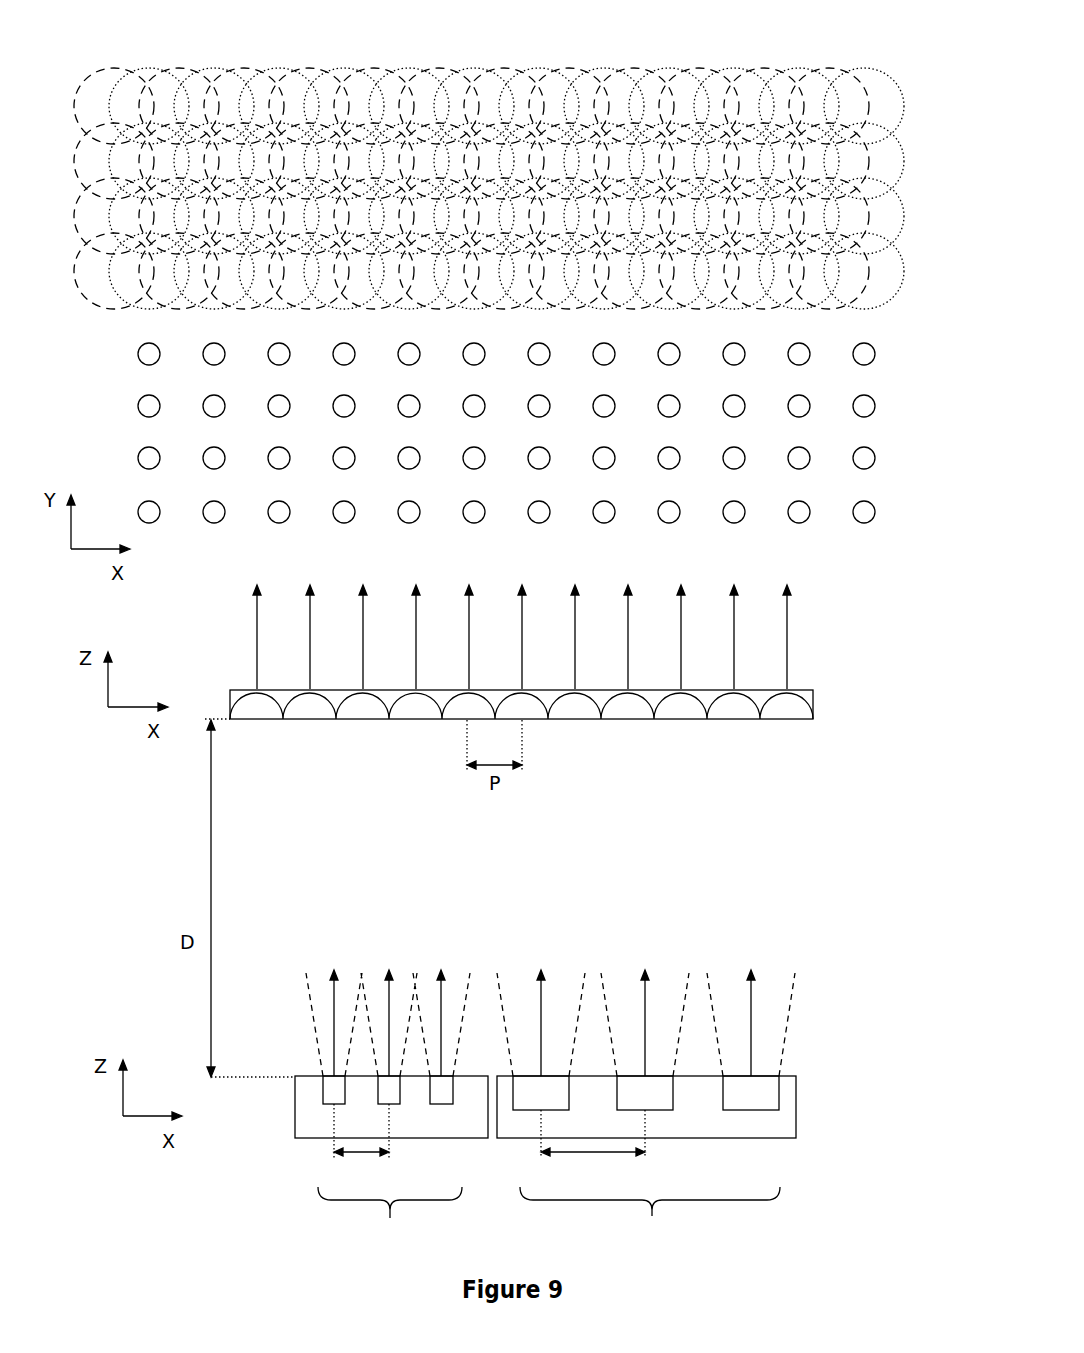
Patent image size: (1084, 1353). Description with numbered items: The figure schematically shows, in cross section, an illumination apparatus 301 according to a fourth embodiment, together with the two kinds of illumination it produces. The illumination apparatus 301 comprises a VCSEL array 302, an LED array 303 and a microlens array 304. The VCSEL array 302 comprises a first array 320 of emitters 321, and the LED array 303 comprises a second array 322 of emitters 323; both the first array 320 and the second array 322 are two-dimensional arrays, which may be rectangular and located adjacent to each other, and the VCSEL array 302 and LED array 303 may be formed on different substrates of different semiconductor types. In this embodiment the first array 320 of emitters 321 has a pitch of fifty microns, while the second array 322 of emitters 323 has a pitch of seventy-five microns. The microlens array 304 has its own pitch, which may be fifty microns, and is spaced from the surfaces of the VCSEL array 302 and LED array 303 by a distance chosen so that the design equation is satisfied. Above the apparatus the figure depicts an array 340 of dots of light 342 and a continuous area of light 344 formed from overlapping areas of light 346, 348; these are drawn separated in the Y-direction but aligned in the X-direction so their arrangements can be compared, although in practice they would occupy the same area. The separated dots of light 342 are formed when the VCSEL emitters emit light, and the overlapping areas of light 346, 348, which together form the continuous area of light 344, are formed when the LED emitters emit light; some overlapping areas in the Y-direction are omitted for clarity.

The illumination apparatus 301 is at (578, 1113).
The VCSEL array 302 is at (356, 1084).
The LED array 303 is at (680, 1089).
The microlens array 304 is at (808, 692).
The first array of emitters 320 is at (356, 1113).
The emitter 321 is at (320, 1090).
The second array of emitters 322 is at (680, 1112).
The emitter 323 is at (760, 1087).
The array of dots of light 340 is at (542, 477).
The dot of light 342 is at (546, 519).
The continuous area of light 344 is at (518, 203).
The overlapping area of light 346 is at (879, 92).
The overlapping area of light 348 is at (833, 70).